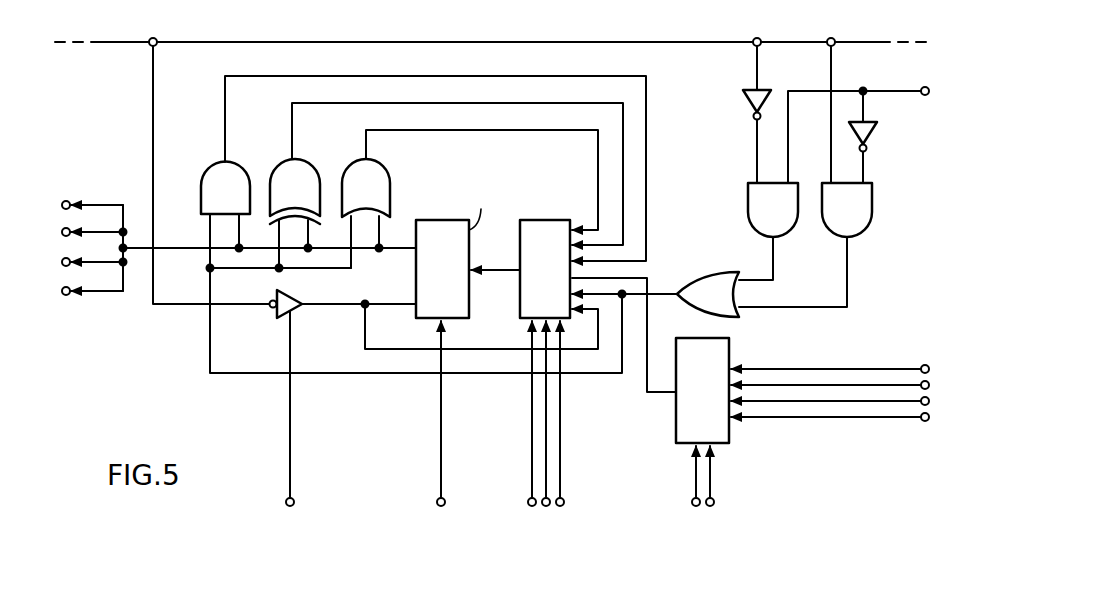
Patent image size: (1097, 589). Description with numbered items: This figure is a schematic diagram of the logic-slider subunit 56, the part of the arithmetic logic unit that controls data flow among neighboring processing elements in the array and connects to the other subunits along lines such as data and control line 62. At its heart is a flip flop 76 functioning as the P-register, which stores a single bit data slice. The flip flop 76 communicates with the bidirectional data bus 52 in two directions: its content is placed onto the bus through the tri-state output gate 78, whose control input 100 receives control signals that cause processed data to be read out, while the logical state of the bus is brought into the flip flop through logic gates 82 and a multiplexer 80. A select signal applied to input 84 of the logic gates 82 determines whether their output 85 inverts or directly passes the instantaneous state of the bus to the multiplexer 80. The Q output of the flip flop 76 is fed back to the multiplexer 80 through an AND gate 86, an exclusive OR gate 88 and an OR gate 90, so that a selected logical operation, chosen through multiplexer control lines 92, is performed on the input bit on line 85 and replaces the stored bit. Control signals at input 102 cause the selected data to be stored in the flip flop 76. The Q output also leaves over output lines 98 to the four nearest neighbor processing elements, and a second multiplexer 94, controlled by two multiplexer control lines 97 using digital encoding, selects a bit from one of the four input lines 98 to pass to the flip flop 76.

The bidirectional data bus 52 is at (627, 42).
The output lines 98 is at (123, 244).
The AND gate 86 is at (230, 170).
The exclusive OR gate 88 is at (297, 170).
The OR gate 90 is at (372, 172).
The multiplexer 80 is at (549, 228).
The tri-state output gate 78 is at (303, 300).
The flip flop 76 is at (456, 302).
The output of gates 85 is at (665, 292).
The logic gates 82 is at (878, 219).
The input of gates 84 is at (926, 95).
The data and control line 62 is at (704, 336).
The logic-slider subunit 56 is at (840, 346).
The second multiplexer 94 is at (722, 351).
The multiplexer control lines 92 is at (567, 500).
The multiplexer control lines 97 is at (718, 500).
The control input 100 is at (286, 507).
The input of flip flop 102 is at (437, 508).